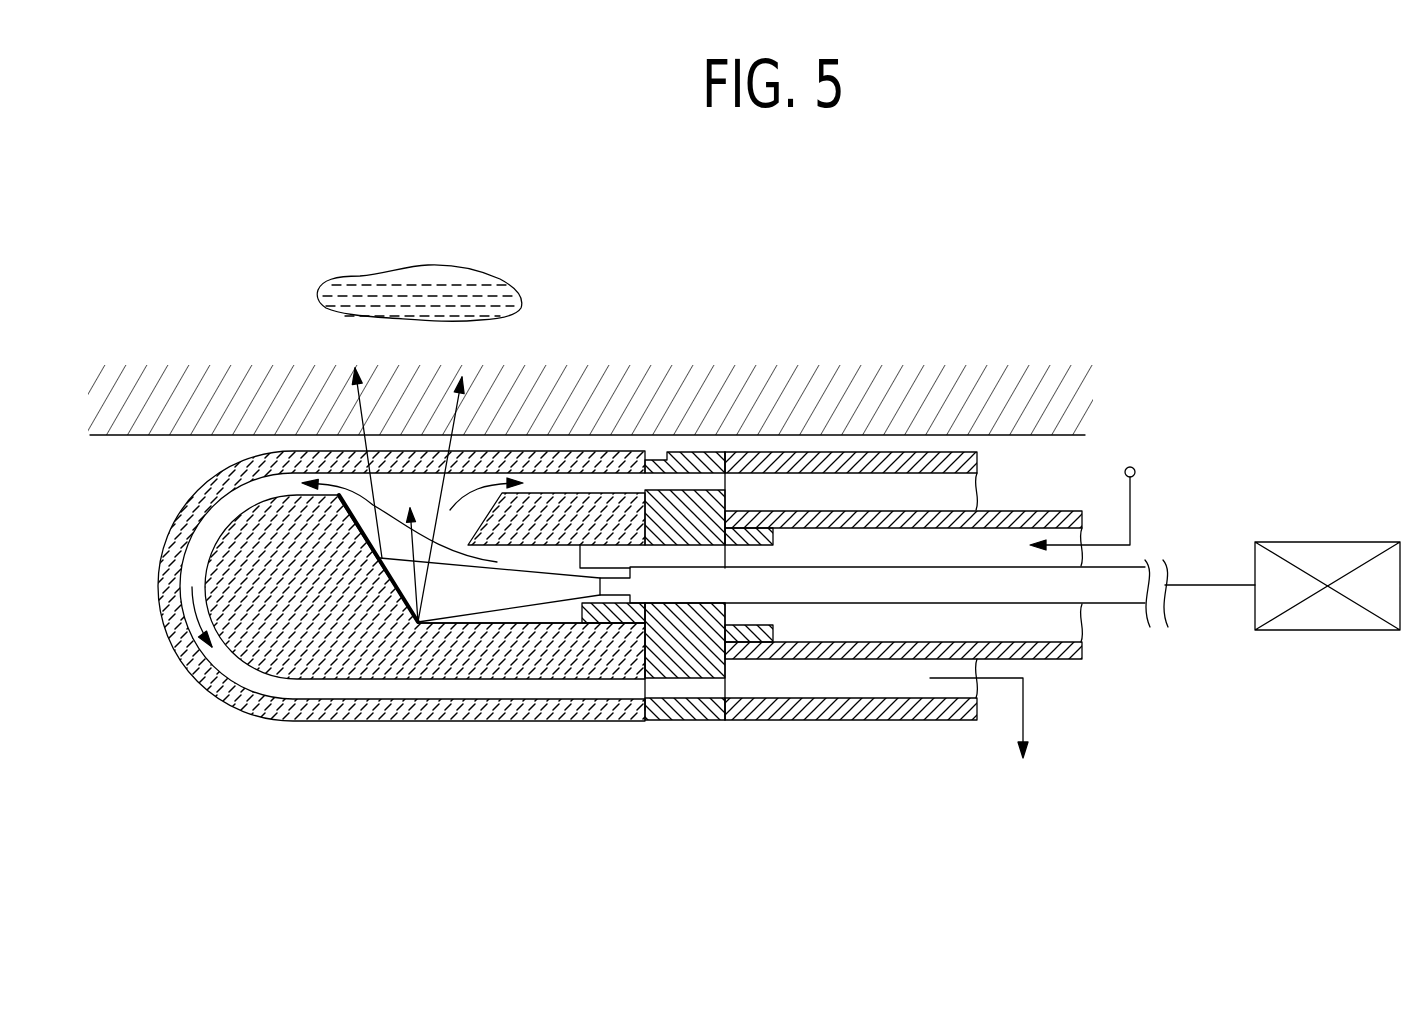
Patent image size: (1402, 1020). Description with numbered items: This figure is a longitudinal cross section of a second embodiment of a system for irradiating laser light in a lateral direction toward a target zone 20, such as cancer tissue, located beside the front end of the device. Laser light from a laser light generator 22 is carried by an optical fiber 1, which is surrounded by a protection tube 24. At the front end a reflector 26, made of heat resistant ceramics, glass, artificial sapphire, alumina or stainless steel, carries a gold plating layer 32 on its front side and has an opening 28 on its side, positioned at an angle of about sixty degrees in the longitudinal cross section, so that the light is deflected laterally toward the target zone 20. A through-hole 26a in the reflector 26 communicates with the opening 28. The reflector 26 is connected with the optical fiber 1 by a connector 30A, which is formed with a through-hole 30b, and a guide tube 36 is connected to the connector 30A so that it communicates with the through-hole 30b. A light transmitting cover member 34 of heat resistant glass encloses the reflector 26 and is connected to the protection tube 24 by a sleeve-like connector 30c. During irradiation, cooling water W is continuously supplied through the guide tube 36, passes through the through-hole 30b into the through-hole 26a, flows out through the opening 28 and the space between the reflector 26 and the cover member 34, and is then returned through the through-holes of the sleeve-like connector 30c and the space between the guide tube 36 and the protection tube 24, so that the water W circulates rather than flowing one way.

The optical fiber 1 is at (1113, 596).
The target zone 20 is at (432, 290).
The laser light generator 22 is at (1327, 568).
The protection tube 24 is at (870, 724).
The reflector 26 is at (320, 630).
The through-hole 26a is at (517, 613).
The opening 28 is at (457, 503).
The connector 30A is at (705, 508).
The through-hole 30b is at (676, 547).
The sleeve-like connector 30c is at (698, 692).
The gold plating layer 32 is at (353, 508).
The cover member 34 is at (208, 692).
The guide tube 36 is at (1027, 511).
The cooling water W is at (1086, 486).